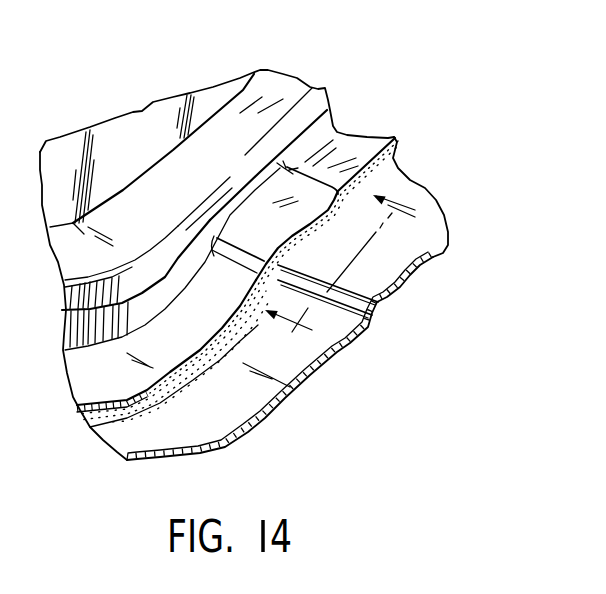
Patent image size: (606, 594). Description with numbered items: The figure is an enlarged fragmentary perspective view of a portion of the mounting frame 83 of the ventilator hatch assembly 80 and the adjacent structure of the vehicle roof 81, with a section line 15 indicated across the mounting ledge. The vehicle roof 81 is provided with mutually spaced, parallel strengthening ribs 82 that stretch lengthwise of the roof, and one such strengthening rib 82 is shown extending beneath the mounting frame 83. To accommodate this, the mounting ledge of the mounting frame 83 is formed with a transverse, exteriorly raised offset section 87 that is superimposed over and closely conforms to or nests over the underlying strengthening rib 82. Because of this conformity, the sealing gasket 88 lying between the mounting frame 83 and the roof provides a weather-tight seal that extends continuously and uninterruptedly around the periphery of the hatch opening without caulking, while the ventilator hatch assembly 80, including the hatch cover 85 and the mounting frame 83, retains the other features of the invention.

The ventilator hatch assembly 80 is at (136, 98).
The hatch cover 85 is at (287, 78).
The mounting frame 83 is at (334, 126).
The offset section 87 is at (250, 238).
The strengthening rib 82 is at (376, 281).
The vehicle roof 81 is at (265, 423).
The sealing gasket 88 is at (88, 424).
The section line 15 is at (349, 279).